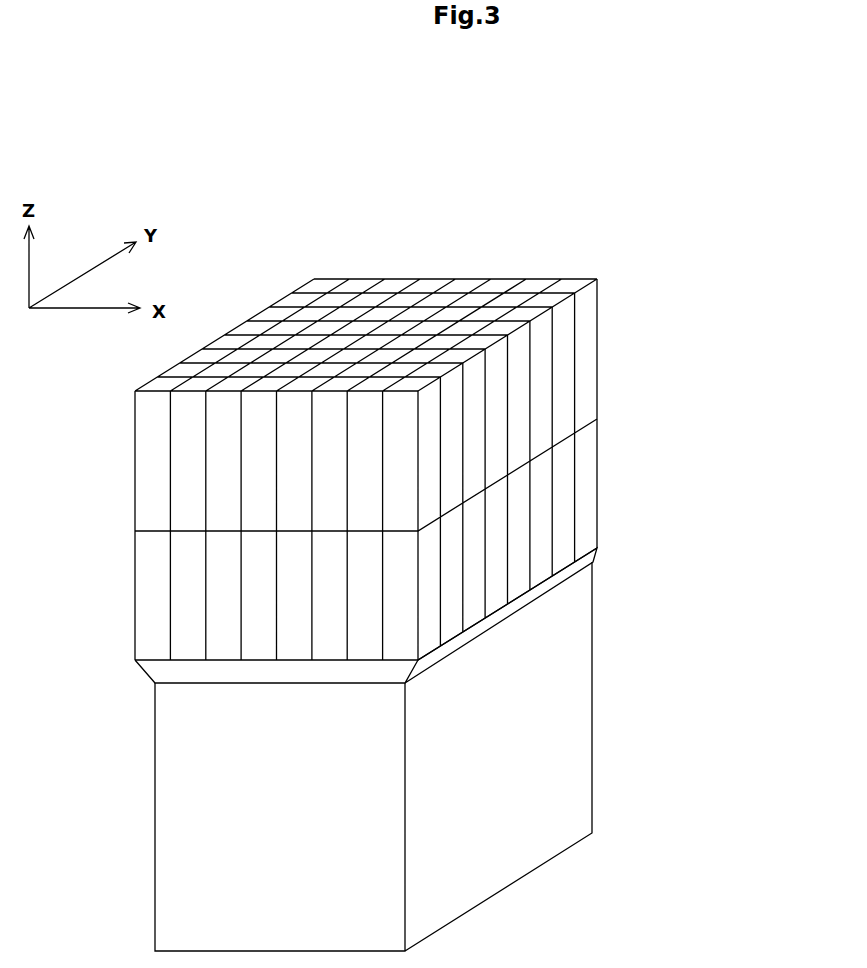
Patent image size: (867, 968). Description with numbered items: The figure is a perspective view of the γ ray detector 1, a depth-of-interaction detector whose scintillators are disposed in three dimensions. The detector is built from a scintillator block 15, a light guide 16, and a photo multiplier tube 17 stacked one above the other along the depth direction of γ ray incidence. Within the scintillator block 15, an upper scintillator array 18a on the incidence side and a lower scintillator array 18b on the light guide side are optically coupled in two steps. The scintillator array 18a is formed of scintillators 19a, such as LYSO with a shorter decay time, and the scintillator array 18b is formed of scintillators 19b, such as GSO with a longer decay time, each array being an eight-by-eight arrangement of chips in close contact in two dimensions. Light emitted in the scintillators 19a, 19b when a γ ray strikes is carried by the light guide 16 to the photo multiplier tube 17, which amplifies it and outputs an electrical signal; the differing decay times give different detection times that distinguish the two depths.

The γ ray detector 1 is at (378, 228).
The scintillator block 15 is at (710, 298).
The light guide 16 is at (596, 553).
The photo multiplier tube 17 is at (578, 700).
The scintillator array 18a is at (618, 349).
The scintillator array 18b is at (624, 472).
The scintillator 19a is at (146, 463).
The scintillator 19b is at (146, 597).